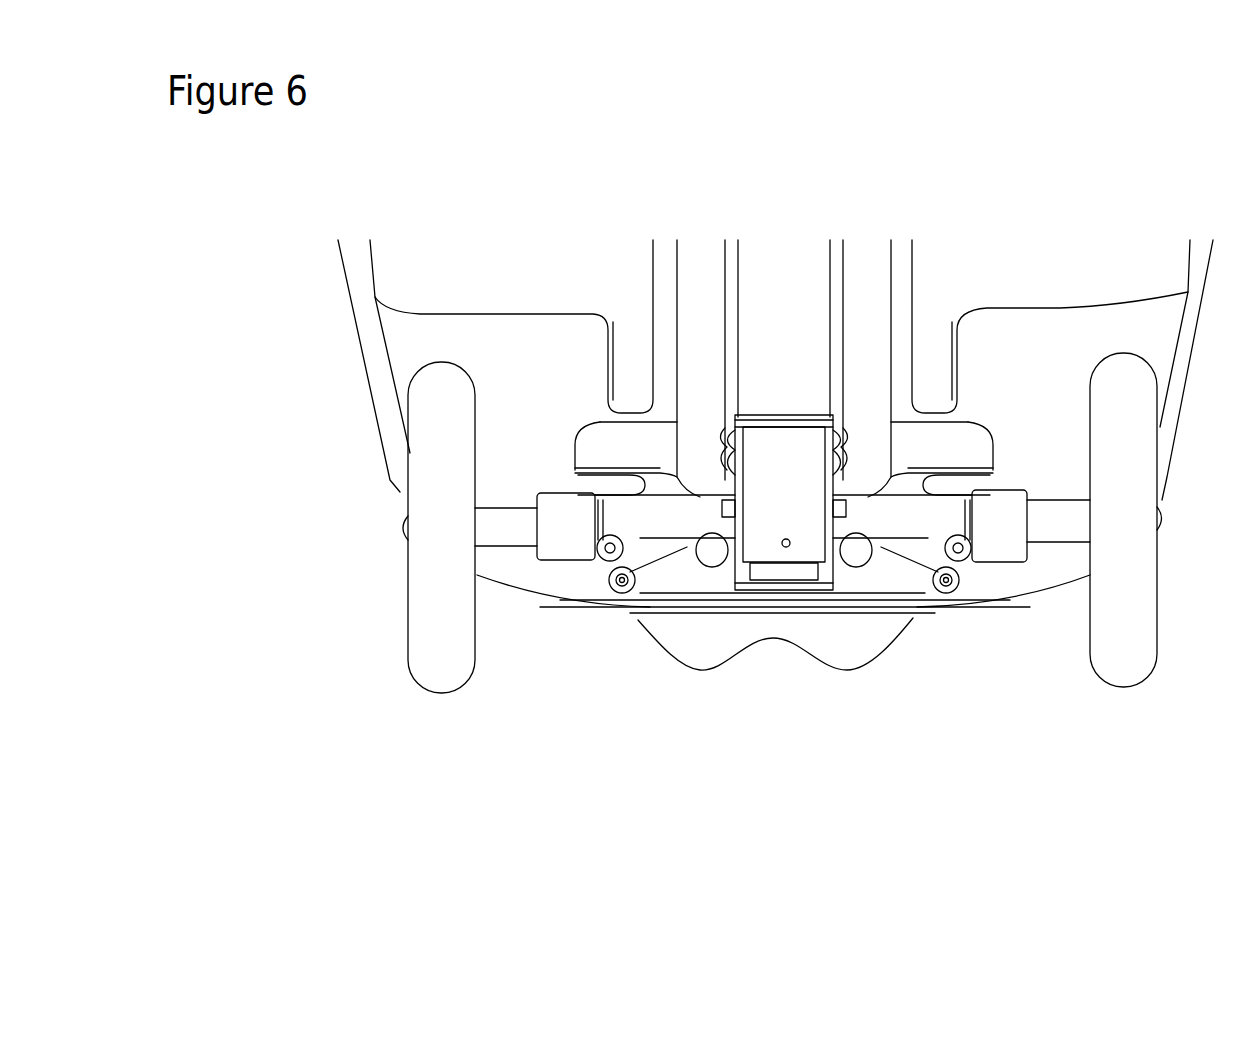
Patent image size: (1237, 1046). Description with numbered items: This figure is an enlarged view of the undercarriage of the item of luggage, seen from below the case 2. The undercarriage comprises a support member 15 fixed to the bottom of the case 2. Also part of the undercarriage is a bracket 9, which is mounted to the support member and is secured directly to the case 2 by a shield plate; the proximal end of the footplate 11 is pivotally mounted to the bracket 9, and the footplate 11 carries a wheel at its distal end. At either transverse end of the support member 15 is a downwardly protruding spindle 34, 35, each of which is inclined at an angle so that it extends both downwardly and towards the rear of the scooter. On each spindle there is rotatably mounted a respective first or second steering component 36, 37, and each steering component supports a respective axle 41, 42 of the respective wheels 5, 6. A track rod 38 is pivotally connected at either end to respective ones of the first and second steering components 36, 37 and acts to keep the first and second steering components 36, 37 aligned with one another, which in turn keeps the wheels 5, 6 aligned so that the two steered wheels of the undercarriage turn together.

The case 2 is at (527, 302).
The wheel 5 is at (410, 618).
The wheel 6 is at (1158, 623).
The bracket 9 is at (778, 583).
The footplate 11 is at (863, 273).
The support member 15 is at (655, 447).
The spindle 34 is at (953, 553).
The spindle 35 is at (608, 548).
The first steering component 36 is at (933, 522).
The second steering component 37 is at (627, 510).
The track rod 38 is at (692, 583).
The axle 41 is at (507, 533).
The axle 42 is at (1060, 522).